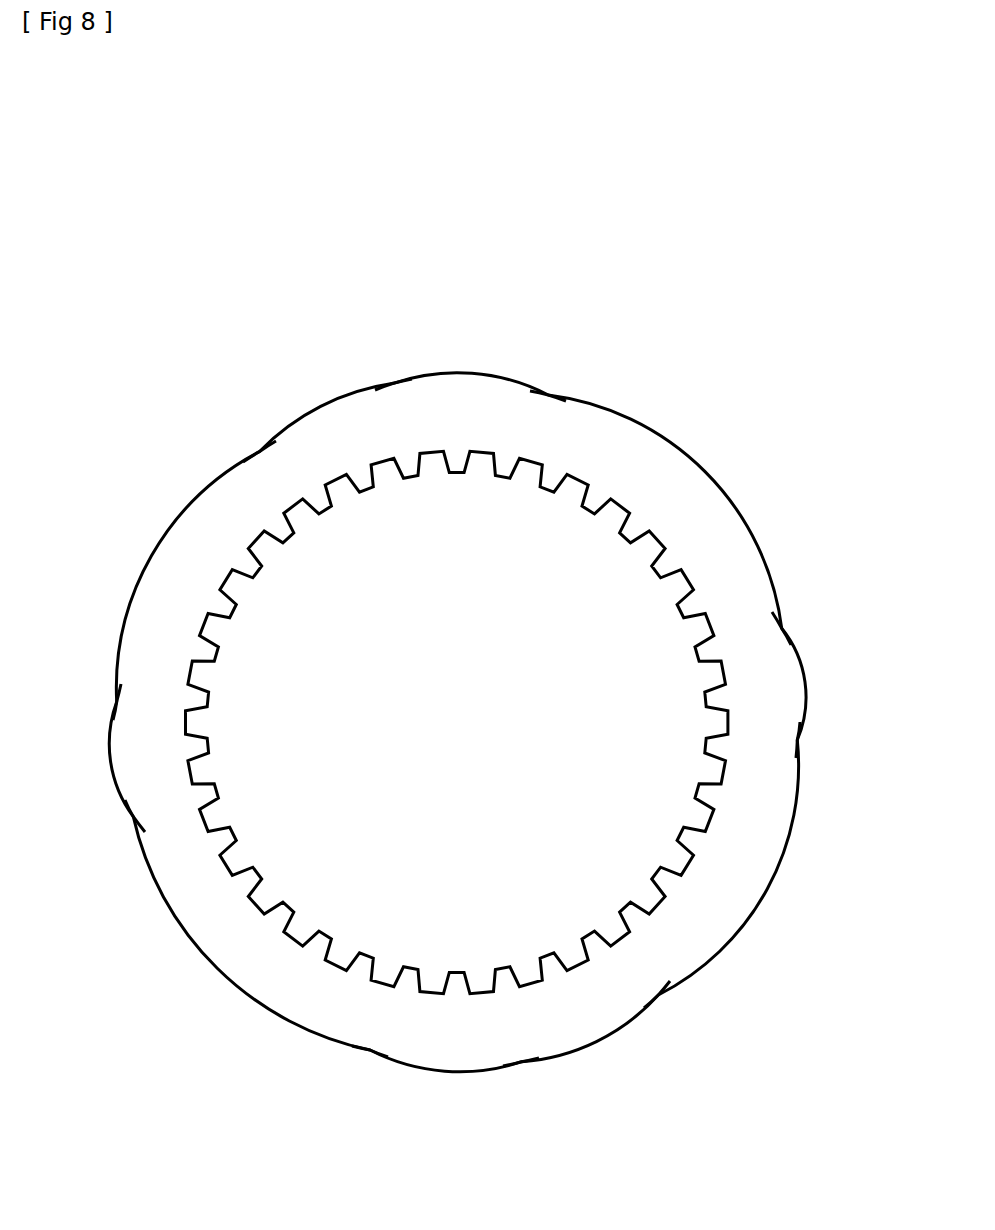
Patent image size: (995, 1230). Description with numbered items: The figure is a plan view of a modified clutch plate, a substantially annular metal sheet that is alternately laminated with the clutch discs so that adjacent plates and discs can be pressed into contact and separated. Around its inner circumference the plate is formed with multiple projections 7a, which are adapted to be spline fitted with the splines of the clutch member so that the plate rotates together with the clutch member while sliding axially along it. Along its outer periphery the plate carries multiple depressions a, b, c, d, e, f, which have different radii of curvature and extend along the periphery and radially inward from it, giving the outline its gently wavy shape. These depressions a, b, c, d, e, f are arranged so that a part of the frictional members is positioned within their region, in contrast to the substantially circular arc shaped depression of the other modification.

The projections 7a is at (548, 485).
The depression a is at (392, 383).
The depression b is at (548, 395).
The depression c is at (259, 452).
The depression d is at (782, 628).
The depression e is at (133, 817).
The depression f is at (658, 995).